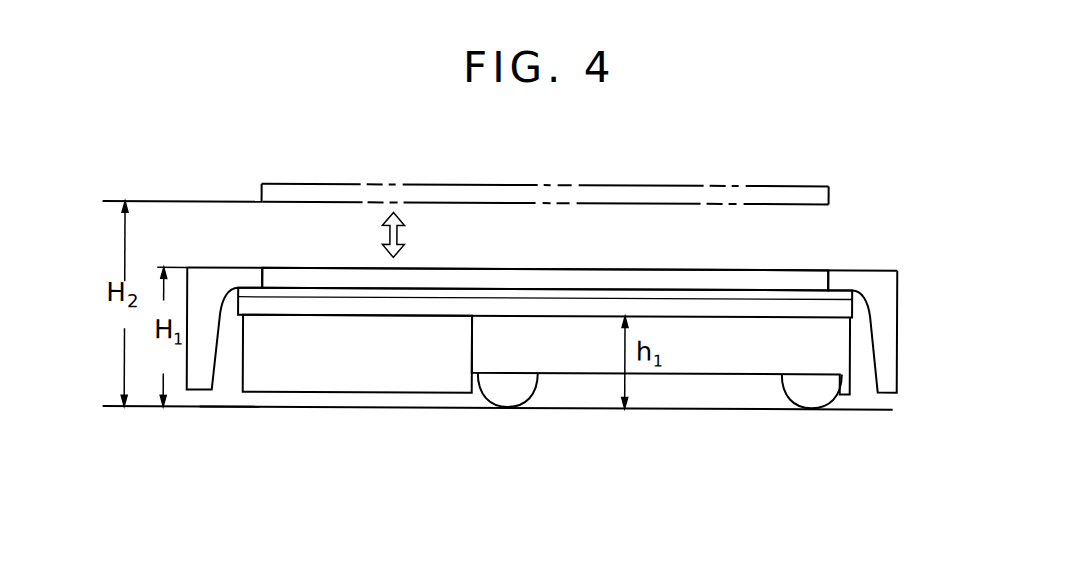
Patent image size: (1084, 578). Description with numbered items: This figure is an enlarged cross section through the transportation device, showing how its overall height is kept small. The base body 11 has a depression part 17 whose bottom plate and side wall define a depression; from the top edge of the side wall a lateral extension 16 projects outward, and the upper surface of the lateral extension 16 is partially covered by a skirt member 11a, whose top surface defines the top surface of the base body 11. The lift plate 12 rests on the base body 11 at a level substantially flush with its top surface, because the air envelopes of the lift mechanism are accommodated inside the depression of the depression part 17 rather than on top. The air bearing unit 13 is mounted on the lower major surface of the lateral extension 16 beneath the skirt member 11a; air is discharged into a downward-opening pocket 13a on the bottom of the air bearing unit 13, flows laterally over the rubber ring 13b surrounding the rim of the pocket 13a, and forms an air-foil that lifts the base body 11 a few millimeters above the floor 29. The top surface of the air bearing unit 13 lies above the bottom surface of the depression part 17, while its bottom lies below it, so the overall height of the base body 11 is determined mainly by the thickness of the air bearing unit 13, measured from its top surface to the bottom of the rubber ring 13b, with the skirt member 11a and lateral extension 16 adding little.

The base body 11 is at (546, 385).
The skirt member 11a is at (194, 380).
The lift plate 12 is at (447, 184).
The air bearing unit 13 is at (660, 345).
The pocket 13a is at (582, 327).
The rubber ring 13b is at (812, 400).
The lateral extension 16 is at (252, 303).
The depression part 17 is at (380, 378).
The floor 29 is at (223, 410).